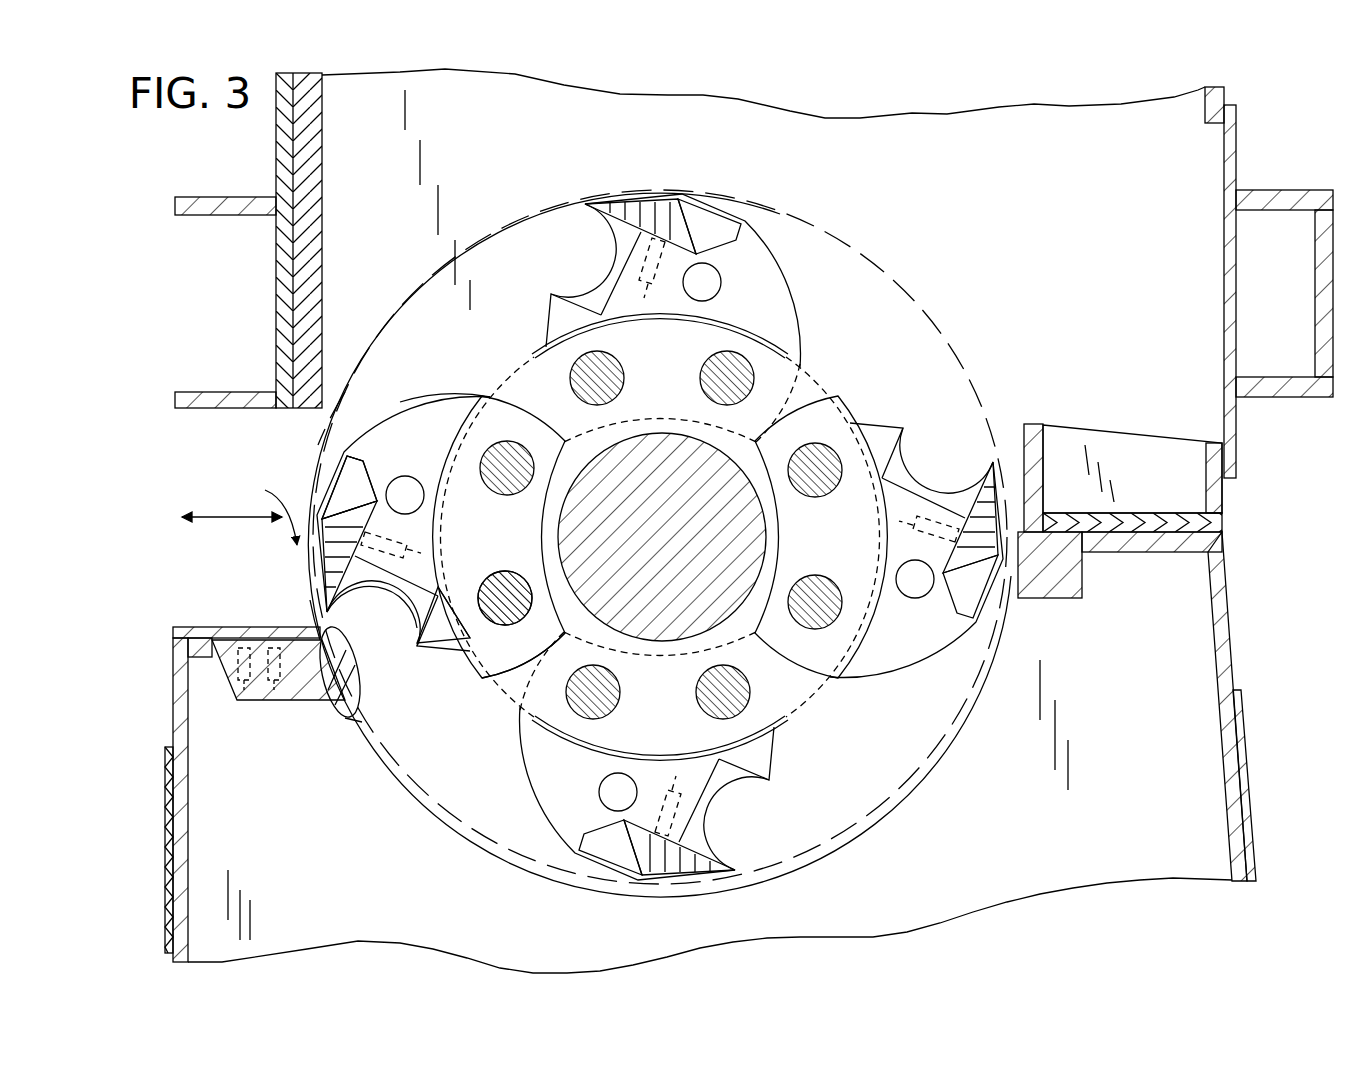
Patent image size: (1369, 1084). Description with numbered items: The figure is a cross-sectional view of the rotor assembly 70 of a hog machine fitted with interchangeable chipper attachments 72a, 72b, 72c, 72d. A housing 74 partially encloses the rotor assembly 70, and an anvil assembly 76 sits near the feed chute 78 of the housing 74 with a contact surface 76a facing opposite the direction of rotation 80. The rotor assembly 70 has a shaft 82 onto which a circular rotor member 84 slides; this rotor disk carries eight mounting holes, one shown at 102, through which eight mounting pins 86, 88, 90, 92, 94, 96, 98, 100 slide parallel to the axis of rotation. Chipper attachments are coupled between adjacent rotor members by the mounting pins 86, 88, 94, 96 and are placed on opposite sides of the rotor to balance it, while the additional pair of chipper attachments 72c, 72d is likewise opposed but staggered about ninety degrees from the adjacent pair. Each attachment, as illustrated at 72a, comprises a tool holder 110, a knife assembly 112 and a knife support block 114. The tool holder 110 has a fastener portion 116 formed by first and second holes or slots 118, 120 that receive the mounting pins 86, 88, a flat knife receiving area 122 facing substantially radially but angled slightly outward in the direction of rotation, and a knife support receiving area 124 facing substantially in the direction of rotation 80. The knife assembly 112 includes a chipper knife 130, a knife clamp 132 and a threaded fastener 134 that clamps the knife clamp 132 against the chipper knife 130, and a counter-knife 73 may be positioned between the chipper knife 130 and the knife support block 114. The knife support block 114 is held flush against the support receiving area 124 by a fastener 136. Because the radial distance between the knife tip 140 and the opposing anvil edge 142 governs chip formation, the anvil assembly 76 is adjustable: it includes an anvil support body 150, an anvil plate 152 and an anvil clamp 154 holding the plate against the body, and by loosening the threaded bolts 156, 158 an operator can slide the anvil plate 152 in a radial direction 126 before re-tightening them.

The rotor assembly 70 is at (490, 368).
The chipper attachment 72a is at (408, 408).
The chipper attachment 72b is at (888, 678).
The chipper attachment 72c is at (788, 266).
The chipper attachment 72d is at (537, 800).
The counter-knife 73 is at (545, 197).
The housing 74 is at (322, 130).
The anvil assembly 76 is at (268, 722).
The contact surface 76a is at (302, 615).
The feed chute 78 is at (205, 400).
The direction of rotation 80 is at (273, 503).
The shaft 82 is at (722, 472).
The rotor member 84 is at (805, 358).
The mounting pin 86 is at (505, 492).
The mounting pin 88 is at (520, 624).
The mounting pin 90 is at (612, 674).
The mounting pin 92 is at (700, 702).
The mounting pin 94 is at (808, 578).
The mounting pin 96 is at (832, 494).
The mounting pin 98 is at (700, 374).
The mounting pin 100 is at (624, 372).
The mounting hole 102 is at (522, 382).
The tool holder 110 is at (447, 415).
The knife assembly 112 is at (372, 476).
The knife support block 114 is at (375, 632).
The fastener portion 116 is at (494, 648).
The first hole 118 is at (505, 448).
The second hole 120 is at (516, 575).
The knife receiving area 122 is at (440, 508).
The knife support receiving area 124 is at (440, 597).
The radial direction 126 is at (218, 510).
The chipper knife 130 is at (326, 612).
The knife clamp 132 is at (360, 450).
The fastener 134 is at (343, 400).
The fastener 136 is at (487, 640).
The tip 140 is at (346, 613).
The anvil edge 142 is at (357, 723).
The anvil support body 150 is at (238, 703).
The anvil plate 152 is at (311, 702).
The anvil clamp 154 is at (173, 630).
The fastener 156 is at (233, 630).
The fastener 158 is at (273, 633).